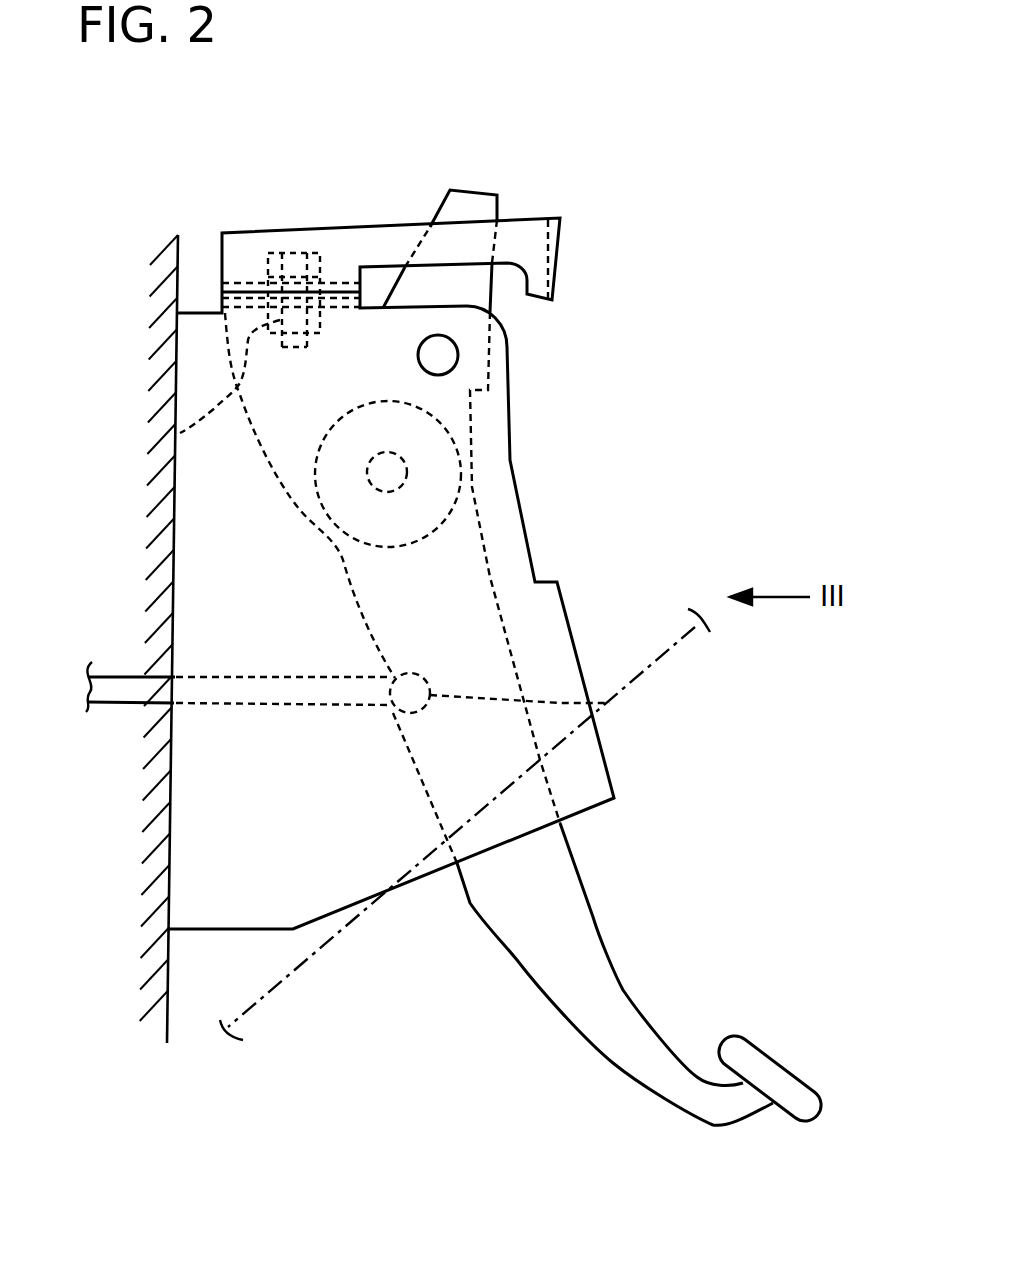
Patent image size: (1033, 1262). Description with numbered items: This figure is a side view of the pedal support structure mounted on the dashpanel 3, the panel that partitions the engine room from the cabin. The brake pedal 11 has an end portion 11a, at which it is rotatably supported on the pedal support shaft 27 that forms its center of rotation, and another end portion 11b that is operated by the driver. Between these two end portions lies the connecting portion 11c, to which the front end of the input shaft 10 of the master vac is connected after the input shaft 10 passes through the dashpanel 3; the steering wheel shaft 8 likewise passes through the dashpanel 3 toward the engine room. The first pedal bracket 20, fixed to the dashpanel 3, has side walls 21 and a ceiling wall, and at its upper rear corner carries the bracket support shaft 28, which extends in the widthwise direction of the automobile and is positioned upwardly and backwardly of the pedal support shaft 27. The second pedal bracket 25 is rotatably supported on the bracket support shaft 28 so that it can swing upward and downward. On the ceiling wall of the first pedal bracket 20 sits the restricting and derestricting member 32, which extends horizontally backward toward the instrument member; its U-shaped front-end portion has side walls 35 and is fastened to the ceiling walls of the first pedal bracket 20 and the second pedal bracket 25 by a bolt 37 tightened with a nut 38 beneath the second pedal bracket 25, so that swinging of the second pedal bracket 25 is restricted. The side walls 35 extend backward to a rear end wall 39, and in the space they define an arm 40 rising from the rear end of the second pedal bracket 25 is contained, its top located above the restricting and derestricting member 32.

The dashpanel 3 is at (155, 962).
The steering wheel shaft 8 is at (658, 648).
The input shaft 10 is at (227, 700).
The brake pedal 11 is at (580, 917).
The end portion 11a is at (430, 505).
The other end portion 11b is at (782, 1065).
The connecting portion 11c is at (610, 703).
The first pedal bracket 20 is at (508, 532).
The side walls 21 is at (442, 573).
The second pedal bracket 25 is at (512, 372).
The pedal support shaft 27 is at (408, 468).
The bracket support shaft 28 is at (438, 355).
The restricting and derestricting member 32 is at (334, 212).
The side walls 35 is at (377, 235).
The bolt 37 is at (292, 253).
The nut 38 is at (180, 433).
The rear end wall 39 is at (563, 238).
The arm 40 is at (473, 207).